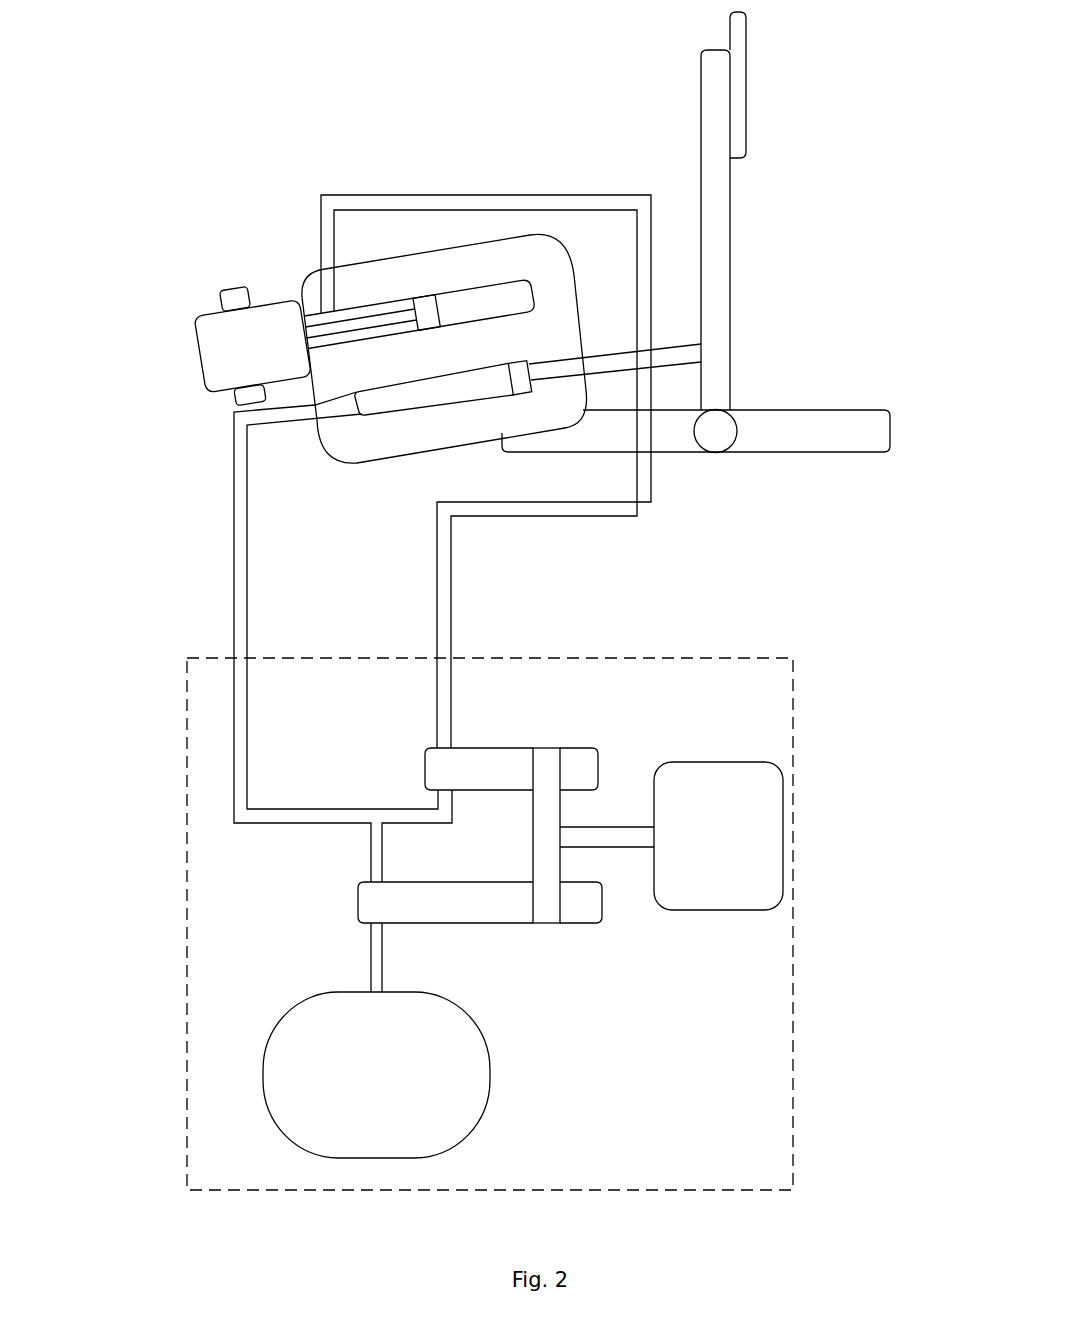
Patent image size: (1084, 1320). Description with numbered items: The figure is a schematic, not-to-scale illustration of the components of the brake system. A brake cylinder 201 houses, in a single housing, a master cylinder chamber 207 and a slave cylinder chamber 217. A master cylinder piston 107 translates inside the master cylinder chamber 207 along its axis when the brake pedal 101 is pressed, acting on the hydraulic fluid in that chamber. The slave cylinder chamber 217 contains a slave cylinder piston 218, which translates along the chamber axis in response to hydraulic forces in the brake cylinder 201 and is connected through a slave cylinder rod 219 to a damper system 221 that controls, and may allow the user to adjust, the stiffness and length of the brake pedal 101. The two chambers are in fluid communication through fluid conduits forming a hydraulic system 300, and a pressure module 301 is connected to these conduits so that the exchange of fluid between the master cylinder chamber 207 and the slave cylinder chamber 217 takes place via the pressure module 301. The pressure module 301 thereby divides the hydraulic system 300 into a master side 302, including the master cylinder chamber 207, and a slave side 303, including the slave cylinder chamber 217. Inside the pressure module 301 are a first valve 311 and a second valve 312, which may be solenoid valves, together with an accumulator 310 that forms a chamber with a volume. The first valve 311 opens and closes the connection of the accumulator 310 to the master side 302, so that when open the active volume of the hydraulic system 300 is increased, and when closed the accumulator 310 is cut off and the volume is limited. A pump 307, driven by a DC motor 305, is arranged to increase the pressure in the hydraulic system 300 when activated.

The brake pedal 101 is at (713, 120).
The brake cylinder 201 is at (302, 285).
The damper system 221 is at (221, 328).
The slave cylinder chamber 217 is at (455, 302).
The slave cylinder piston 218 is at (420, 305).
The slave cylinder rod 219 is at (390, 316).
The master cylinder chamber 207 is at (380, 410).
The master cylinder piston 107 is at (521, 384).
The hydraulic system 300 is at (235, 496).
The master side 302 is at (235, 755).
The slave side 303 is at (447, 690).
The pressure module 301 is at (793, 676).
The second valve 312 is at (512, 762).
The first valve 311 is at (587, 912).
The pump 307 is at (607, 837).
The DC motor 305 is at (760, 819).
The accumulator 310 is at (283, 1067).